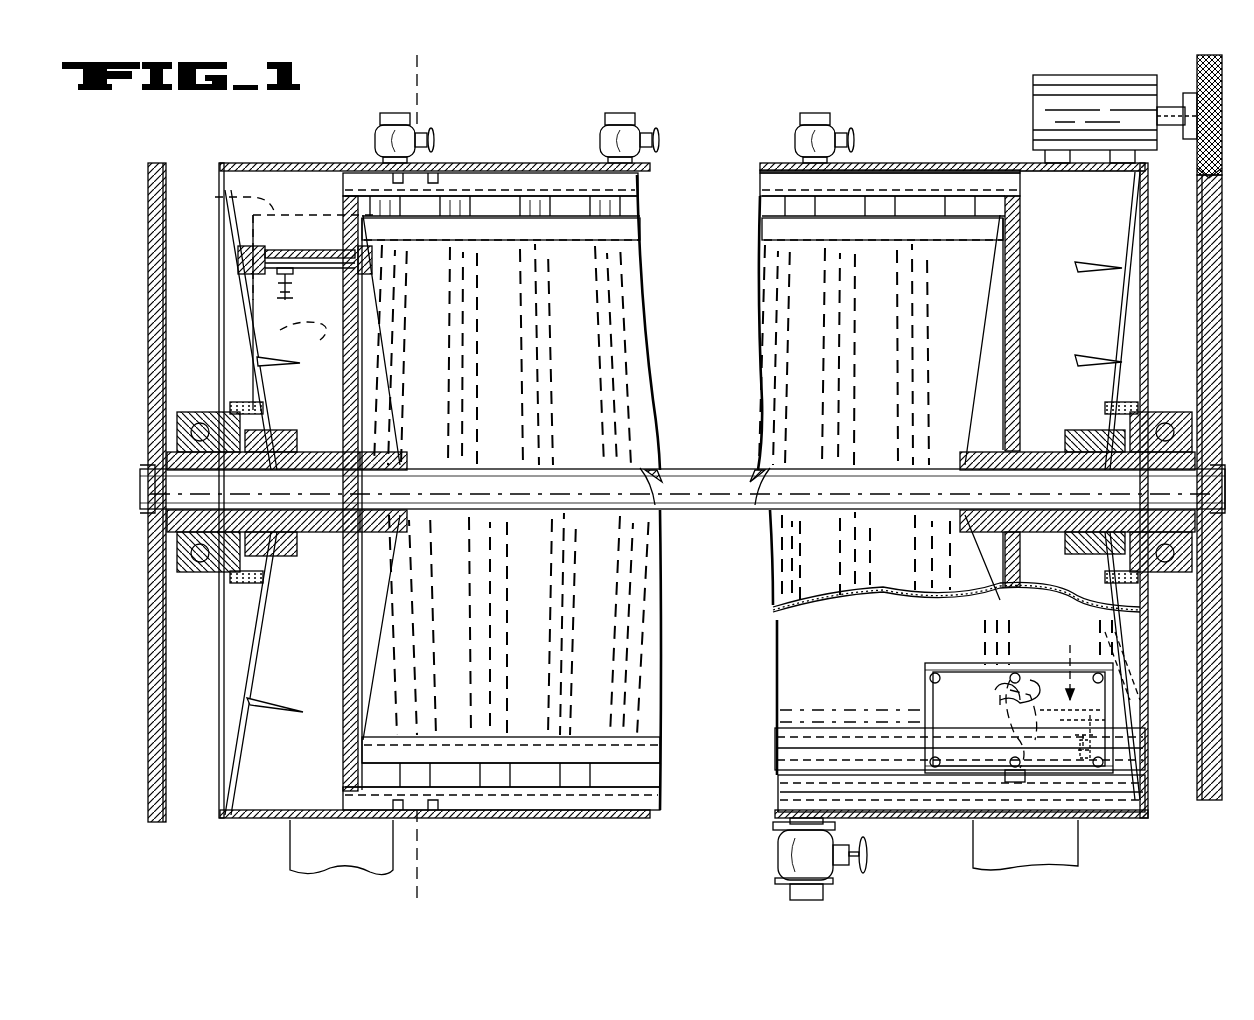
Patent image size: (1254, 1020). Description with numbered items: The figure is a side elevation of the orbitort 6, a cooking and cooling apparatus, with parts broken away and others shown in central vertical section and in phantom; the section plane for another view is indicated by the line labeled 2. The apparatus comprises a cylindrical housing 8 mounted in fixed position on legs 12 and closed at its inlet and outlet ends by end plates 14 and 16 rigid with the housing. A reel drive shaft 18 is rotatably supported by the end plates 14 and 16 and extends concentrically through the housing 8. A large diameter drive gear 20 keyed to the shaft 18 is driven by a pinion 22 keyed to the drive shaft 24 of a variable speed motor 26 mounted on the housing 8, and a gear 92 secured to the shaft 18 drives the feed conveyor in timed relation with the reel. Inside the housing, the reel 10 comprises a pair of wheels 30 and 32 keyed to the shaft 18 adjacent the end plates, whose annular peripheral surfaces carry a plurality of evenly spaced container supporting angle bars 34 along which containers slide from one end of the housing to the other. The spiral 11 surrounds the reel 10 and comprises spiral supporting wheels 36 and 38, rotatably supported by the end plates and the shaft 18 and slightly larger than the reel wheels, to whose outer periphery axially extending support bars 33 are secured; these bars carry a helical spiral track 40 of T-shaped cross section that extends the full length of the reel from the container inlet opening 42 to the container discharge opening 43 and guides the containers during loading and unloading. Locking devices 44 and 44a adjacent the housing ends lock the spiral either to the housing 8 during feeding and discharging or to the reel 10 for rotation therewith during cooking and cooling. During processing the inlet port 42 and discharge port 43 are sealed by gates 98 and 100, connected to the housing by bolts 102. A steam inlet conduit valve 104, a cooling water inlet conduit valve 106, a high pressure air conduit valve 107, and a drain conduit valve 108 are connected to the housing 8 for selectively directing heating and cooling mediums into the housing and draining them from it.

The section line 2- 2 is at (428, 75).
The orbitort 6 is at (908, 125).
The cylindrical housing 8 is at (500, 163).
The reel 10 is at (1003, 222).
The spiral 11 is at (945, 172).
The legs 12 is at (356, 852).
The end plate 14 is at (283, 322).
The end plate 16 is at (1115, 337).
The reel drive shaft 18 is at (762, 476).
The drive gear 20 is at (1210, 215).
The pinion 22 is at (1205, 185).
The drive shaft 24 is at (1172, 130).
The variable speed motor 26 is at (1080, 80).
The wheel 30 is at (378, 590).
The wheel 32 is at (985, 305).
The support bars 33 is at (760, 180).
The container supporting angle bars 34 is at (642, 240).
The spiral supporting wheel 36 is at (348, 388).
The spiral supporting wheel 38 is at (1020, 316).
The spiral track 40 is at (642, 212).
The container inlet opening 42 is at (322, 338).
The container discharge opening 43 is at (975, 665).
The locking device 44 is at (302, 245).
The locking device 44a is at (1096, 656).
The gear 92 is at (148, 183).
The gate 98 is at (276, 241).
The gate 100 is at (925, 703).
The bolts 102 is at (940, 682).
The steam inlet conduit valve 104 is at (375, 142).
The cooling water inlet conduit valve 106 is at (640, 125).
The high pressure air conduit valve 107 is at (830, 125).
The drain conduit valve 108 is at (780, 852).